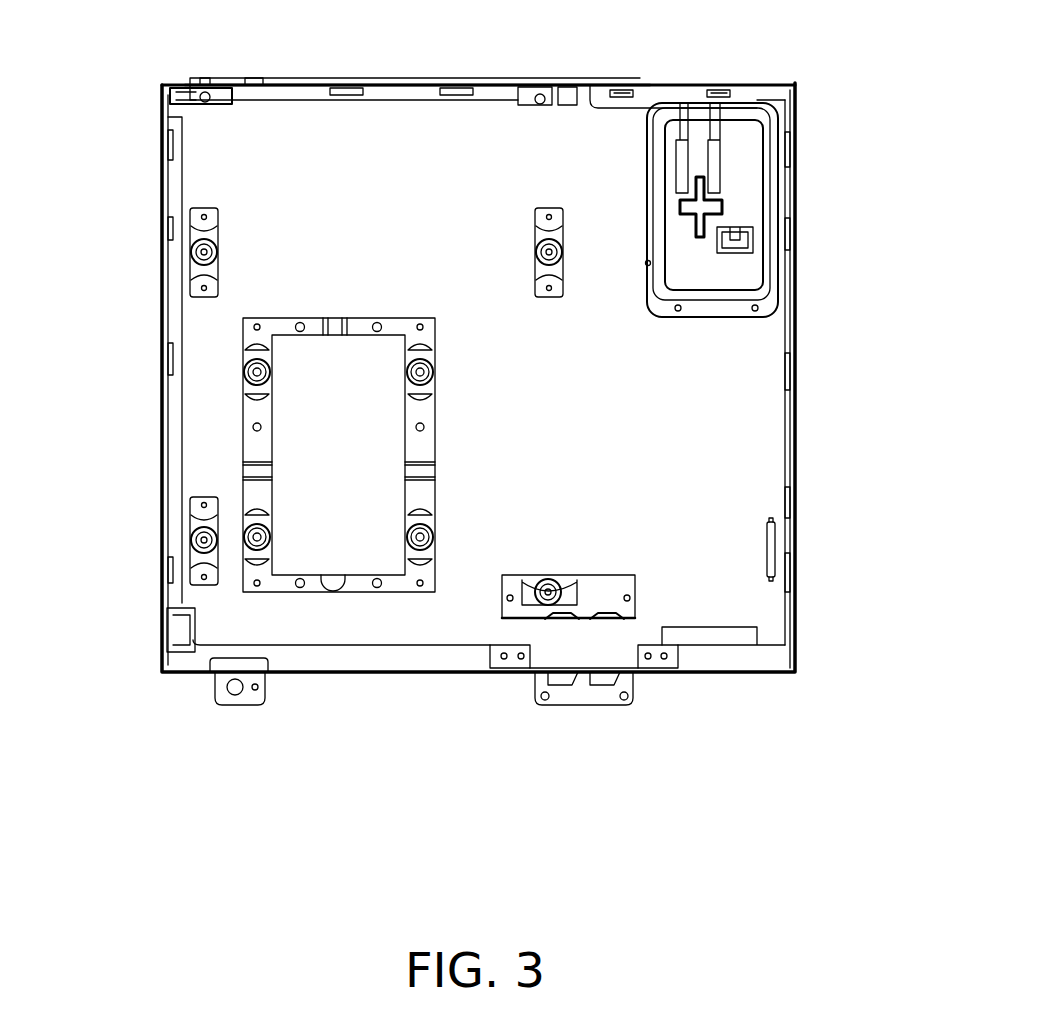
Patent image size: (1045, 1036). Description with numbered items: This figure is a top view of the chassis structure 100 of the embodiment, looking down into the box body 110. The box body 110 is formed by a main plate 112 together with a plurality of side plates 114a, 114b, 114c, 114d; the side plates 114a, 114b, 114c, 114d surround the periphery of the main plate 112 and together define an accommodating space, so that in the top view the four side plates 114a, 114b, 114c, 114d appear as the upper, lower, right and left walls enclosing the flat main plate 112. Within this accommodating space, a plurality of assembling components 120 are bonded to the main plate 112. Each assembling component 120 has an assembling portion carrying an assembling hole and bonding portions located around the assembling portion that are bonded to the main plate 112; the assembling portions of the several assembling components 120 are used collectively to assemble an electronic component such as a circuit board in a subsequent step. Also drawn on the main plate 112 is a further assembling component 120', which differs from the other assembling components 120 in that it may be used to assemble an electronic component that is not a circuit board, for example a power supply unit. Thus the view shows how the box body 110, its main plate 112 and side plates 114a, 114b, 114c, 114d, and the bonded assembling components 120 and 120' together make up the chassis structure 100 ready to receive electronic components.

The chassis structure 100 is at (873, 882).
The box body 110 is at (810, 437).
The main plate 112 is at (460, 593).
The side plate 114a is at (610, 78).
The side plate 114b is at (320, 677).
The side plate 114c is at (797, 330).
The side plate 114d is at (160, 192).
The assembling components 120 is at (412, 313).
The assembling component 120' is at (774, 210).